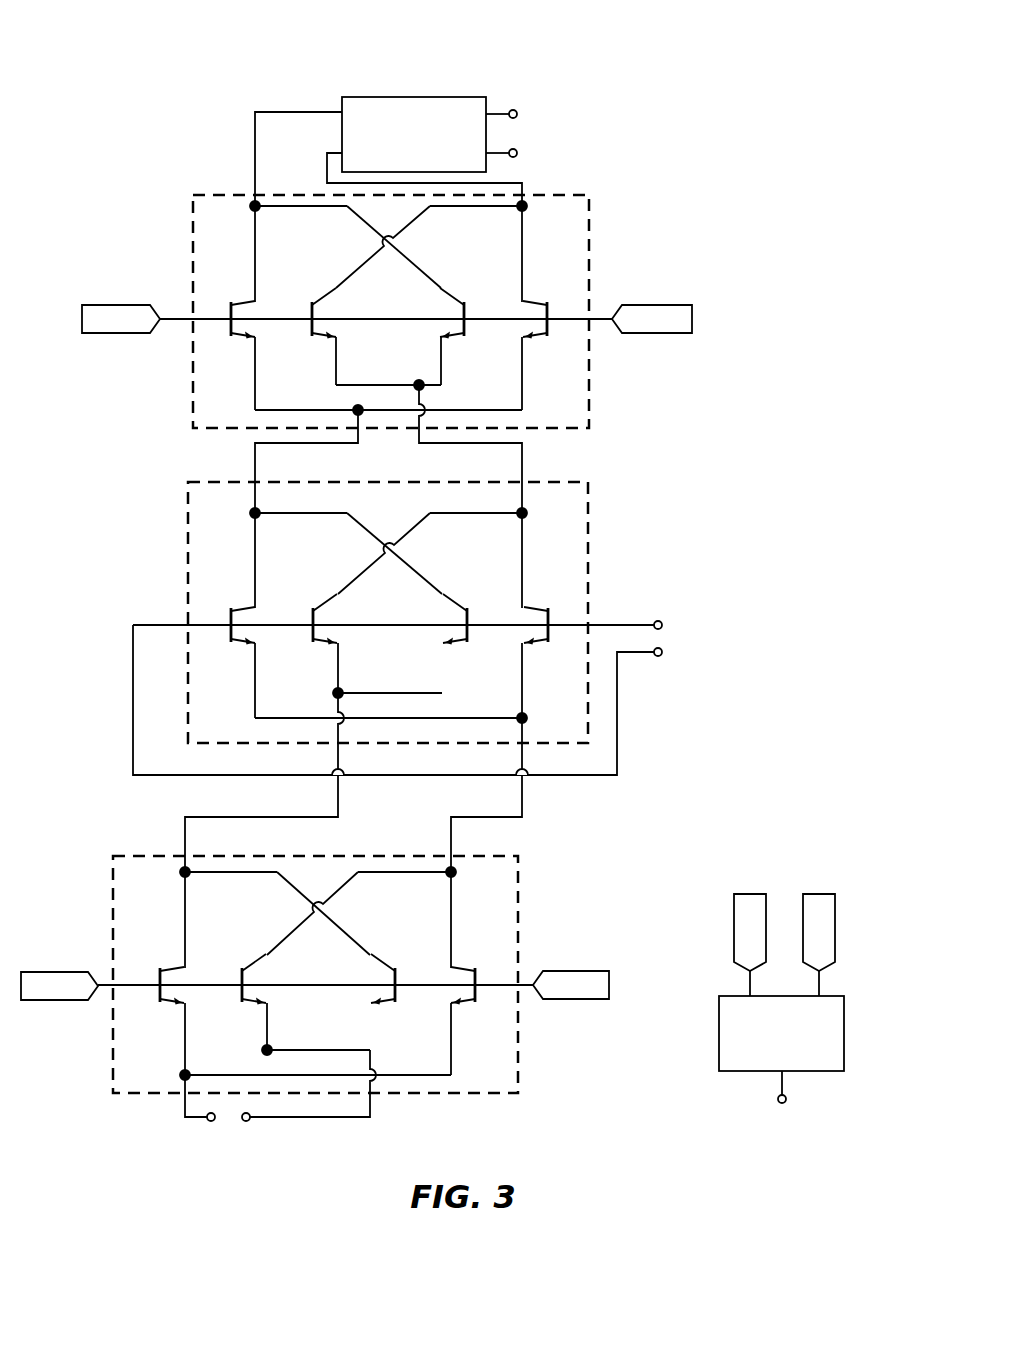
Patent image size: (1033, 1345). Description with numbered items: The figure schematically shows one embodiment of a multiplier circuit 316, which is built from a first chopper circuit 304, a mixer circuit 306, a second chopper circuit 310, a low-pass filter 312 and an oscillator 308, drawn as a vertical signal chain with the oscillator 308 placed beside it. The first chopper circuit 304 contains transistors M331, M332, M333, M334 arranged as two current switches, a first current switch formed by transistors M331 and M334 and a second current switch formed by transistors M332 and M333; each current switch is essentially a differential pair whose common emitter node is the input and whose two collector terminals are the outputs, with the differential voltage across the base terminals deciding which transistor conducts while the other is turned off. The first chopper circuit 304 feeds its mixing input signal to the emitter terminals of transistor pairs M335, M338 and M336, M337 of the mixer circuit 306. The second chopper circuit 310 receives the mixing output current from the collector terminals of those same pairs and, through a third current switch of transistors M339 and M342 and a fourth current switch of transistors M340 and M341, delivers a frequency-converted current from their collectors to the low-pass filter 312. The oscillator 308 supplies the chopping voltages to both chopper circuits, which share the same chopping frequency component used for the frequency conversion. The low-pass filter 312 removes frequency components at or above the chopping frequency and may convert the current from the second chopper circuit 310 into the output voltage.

The first chopper circuit 304 is at (315, 1003).
The mixer circuit 306 is at (418, 677).
The oscillator 308 is at (719, 1033).
The second chopper circuit 310 is at (387, 354).
The low-pass filter 312 is at (416, 97).
The multiplier circuit 316 is at (658, 69).
The transistor M331 is at (175, 966).
The transistor M332 is at (255, 966).
The transistor M333 is at (388, 966).
The transistor M334 is at (480, 966).
The transistor M335 is at (245, 606).
The transistor M336 is at (328, 606).
The transistor M337 is at (462, 606).
The transistor M338 is at (552, 606).
The transistor M339 is at (247, 300).
The transistor M340 is at (328, 300).
The transistor M341 is at (448, 300).
The transistor M342 is at (552, 300).